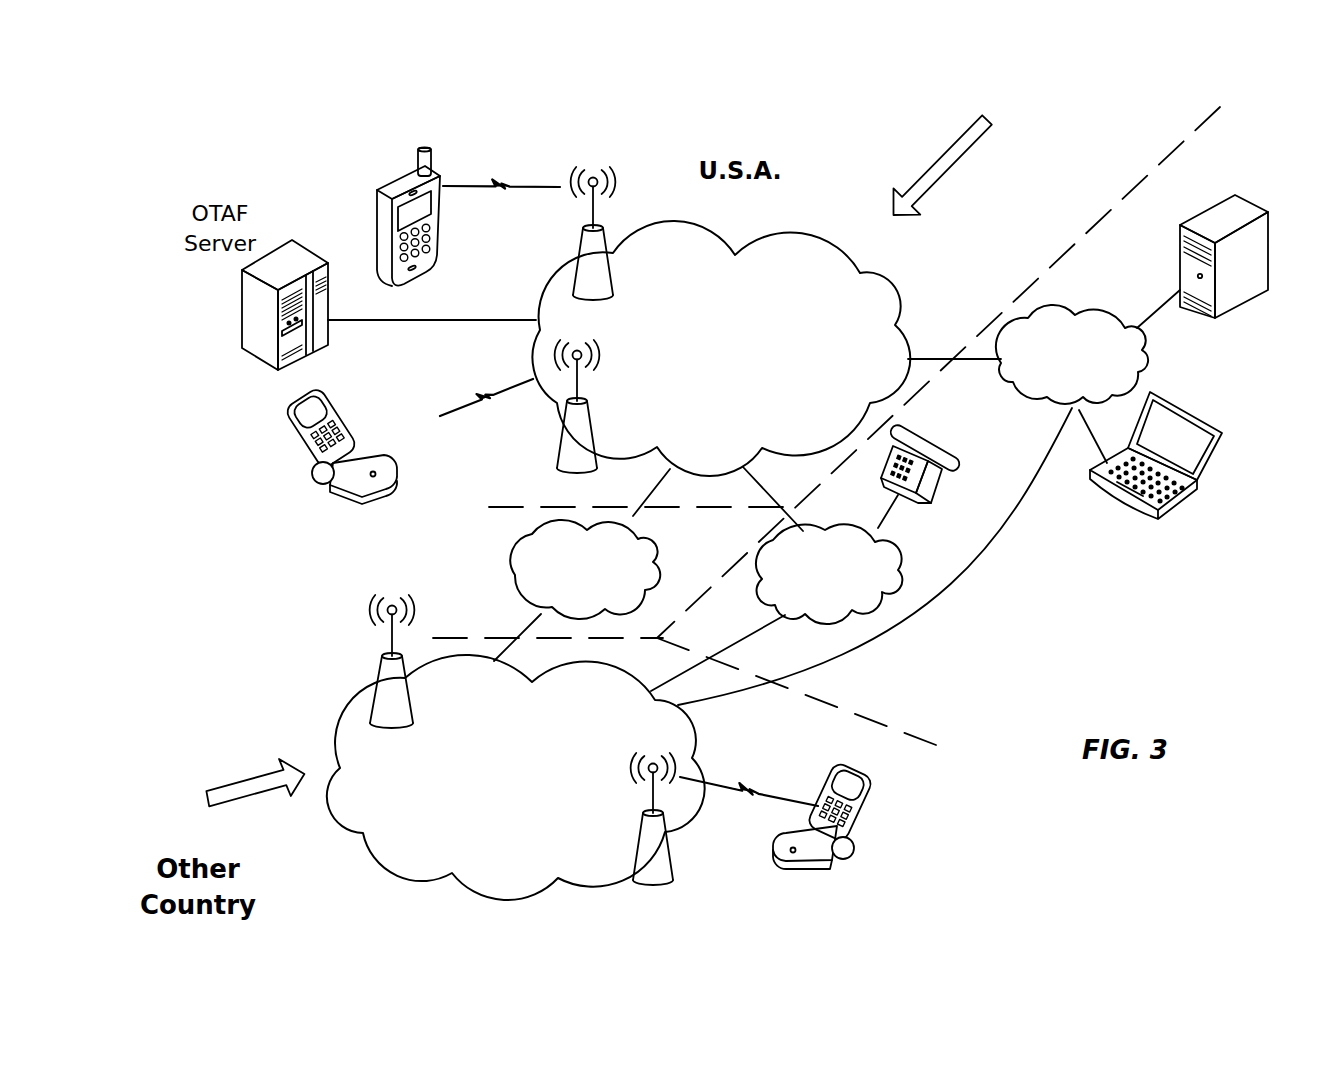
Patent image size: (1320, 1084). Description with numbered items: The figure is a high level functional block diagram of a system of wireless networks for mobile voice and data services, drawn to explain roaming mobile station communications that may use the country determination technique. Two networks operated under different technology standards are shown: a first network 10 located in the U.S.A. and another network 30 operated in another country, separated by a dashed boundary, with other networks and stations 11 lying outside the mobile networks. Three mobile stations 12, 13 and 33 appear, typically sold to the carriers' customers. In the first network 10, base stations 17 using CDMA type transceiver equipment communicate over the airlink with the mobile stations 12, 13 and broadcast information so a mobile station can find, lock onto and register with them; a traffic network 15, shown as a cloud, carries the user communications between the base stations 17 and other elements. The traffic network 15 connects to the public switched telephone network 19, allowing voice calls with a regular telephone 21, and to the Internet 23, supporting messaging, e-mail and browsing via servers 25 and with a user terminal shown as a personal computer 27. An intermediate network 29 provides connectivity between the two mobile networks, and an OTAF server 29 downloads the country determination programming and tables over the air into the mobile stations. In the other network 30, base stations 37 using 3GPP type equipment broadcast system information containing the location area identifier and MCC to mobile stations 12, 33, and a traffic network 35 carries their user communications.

The first wireless network 10 is at (953, 156).
The other networks and stations 11 is at (826, 426).
The mobile station 12 is at (353, 424).
The mobile station 13 is at (370, 196).
The traffic network 15 is at (903, 302).
The base station 17 is at (578, 245).
The public switched telephone network 19 is at (901, 558).
The telephone station 21 is at (942, 482).
The Internet 23 is at (1145, 375).
The server 25 is at (1180, 270).
The personal computer 27 is at (1122, 505).
The OTAF server / intermediate network 29 is at (242, 307).
The other wireless network 30 is at (233, 786).
The mobile station 33 is at (886, 800).
The traffic network 35 is at (702, 737).
The base station 37 is at (382, 676).